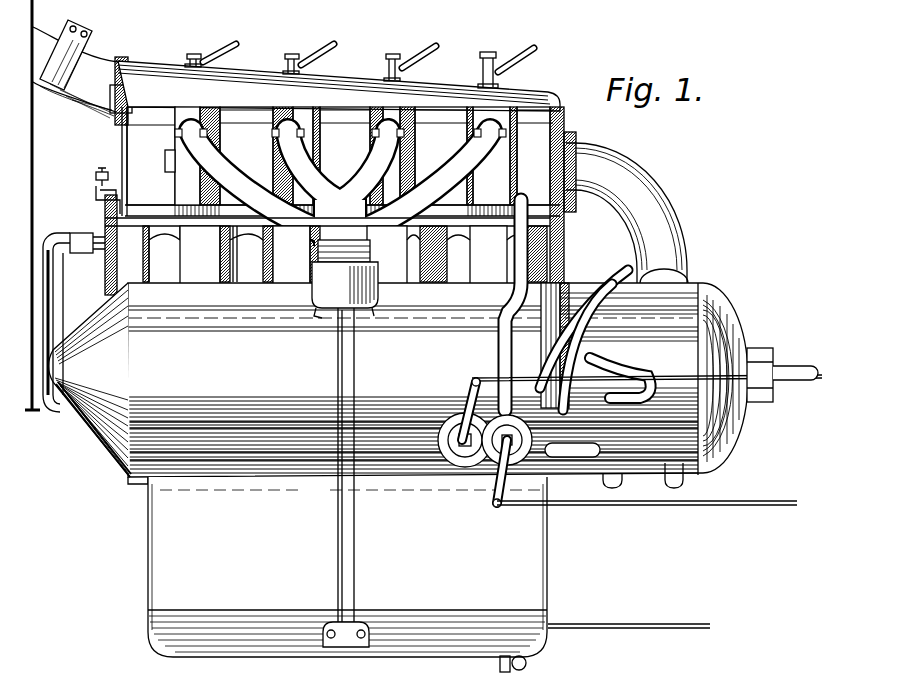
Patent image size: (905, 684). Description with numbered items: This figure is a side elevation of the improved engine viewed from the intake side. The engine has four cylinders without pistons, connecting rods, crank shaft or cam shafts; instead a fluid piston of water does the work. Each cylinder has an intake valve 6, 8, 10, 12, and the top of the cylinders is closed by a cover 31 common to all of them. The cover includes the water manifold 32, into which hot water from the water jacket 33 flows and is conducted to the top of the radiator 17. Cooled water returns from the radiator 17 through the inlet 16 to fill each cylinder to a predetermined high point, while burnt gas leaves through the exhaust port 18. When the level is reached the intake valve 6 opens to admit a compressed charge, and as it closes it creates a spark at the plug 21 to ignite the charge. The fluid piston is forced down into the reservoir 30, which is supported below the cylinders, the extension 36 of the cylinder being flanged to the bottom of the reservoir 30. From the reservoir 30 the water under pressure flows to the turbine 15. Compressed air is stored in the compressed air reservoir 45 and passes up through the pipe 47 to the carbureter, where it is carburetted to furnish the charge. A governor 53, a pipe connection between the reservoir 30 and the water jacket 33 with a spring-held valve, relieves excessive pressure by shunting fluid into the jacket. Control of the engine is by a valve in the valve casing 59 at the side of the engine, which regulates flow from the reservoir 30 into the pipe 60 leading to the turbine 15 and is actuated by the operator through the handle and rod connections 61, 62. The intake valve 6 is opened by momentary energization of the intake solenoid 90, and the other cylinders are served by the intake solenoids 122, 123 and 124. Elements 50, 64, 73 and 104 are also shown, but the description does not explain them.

The intake valve 6 is at (180, 160).
The intake valve 8 is at (276, 148).
The intake valve 10 is at (378, 153).
The intake valve 12 is at (486, 118).
The turbine 15 is at (727, 432).
The inlet 16 is at (60, 262).
The radiator 17 is at (30, 174).
The exhaust port 18 is at (308, 317).
The spark plug 21 is at (197, 57).
The reservoir 30 is at (112, 476).
The cover 31 is at (261, 64).
The water manifold 32 is at (161, 68).
The water jacket 33 is at (140, 133).
The extension 36 is at (160, 540).
The compressed air reservoir 45 is at (137, 627).
The pipe 47 is at (337, 370).
The valve 50 is at (97, 168).
The governor 53 is at (93, 196).
The valve casing 59 is at (446, 414).
The pipe 60 is at (560, 472).
The handle connection 61 is at (468, 392).
The rod connection 62 is at (465, 403).
The pipe 64 is at (496, 312).
The exhaust pipe 73 is at (645, 195).
The intake solenoid 90 is at (190, 262).
The fitting 104 is at (92, 234).
The intake solenoid 122 is at (284, 262).
The intake solenoid 123 is at (404, 292).
The intake solenoid 124 is at (500, 253).